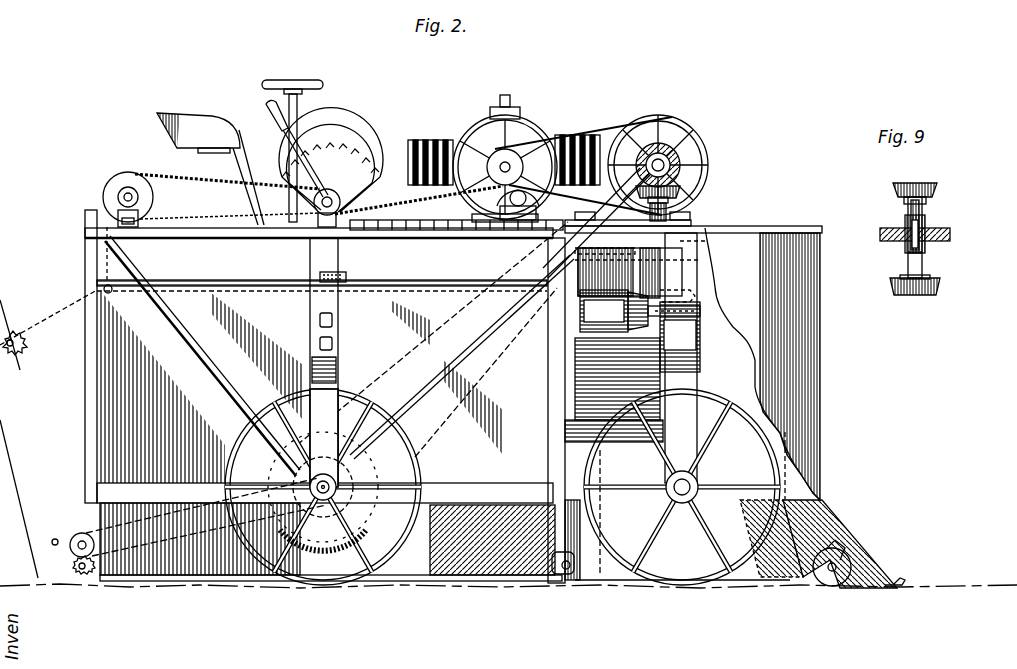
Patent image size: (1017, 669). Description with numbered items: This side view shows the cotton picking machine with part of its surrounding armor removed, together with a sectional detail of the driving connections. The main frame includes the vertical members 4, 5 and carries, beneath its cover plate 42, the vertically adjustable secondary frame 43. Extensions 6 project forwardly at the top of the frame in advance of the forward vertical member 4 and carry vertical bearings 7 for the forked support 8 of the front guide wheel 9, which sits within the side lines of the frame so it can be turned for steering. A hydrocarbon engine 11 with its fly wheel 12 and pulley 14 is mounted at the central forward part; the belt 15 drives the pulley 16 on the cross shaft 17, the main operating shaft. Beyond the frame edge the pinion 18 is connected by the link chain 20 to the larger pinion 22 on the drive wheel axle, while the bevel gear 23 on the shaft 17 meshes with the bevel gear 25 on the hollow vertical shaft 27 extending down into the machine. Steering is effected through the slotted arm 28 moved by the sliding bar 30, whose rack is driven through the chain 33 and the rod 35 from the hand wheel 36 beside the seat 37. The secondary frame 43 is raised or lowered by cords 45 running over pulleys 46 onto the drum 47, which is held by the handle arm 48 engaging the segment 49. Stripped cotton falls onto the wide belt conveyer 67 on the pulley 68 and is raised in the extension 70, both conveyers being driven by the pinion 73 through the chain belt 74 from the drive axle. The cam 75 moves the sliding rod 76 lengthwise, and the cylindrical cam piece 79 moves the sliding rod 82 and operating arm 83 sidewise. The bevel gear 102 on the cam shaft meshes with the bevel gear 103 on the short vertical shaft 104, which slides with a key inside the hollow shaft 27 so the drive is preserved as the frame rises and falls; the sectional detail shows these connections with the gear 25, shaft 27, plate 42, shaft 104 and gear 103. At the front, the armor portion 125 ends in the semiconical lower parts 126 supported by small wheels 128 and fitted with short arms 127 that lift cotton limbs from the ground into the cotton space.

In FIG. 2, the vertical member 4 is at (550, 366).
In FIG. 2, the vertical member 5 is at (85, 368).
In FIG. 2, the extensions 6 is at (655, 237).
In FIG. 2, the vertical bearings 7 is at (663, 273).
In FIG. 2, the forked support 8 is at (681, 358).
In FIG. 2, the front or guide wheel 9 is at (730, 418).
In FIG. 2, the hydrocarbon engine 11 is at (422, 140).
In FIG. 2, the fly wheel 12 is at (522, 126).
In FIG. 2, the pulley 14 is at (500, 158).
In FIG. 2, the belt 15 is at (568, 134).
In FIG. 2, the pulley 16 is at (685, 134).
In FIG. 2, the cross shaft 17 is at (658, 142).
In FIG. 2, the pinion 18 is at (640, 150).
In FIG. 2, the link chain 20 is at (392, 380).
In FIG. 2, the larger pinion 22 is at (360, 456).
In FIG. 2, the bevel gear 23 is at (682, 162).
In FIG. 2, the bevel gear 25 is at (676, 190).
In FIG. 9, the bevel gear 25 is at (893, 190).
In FIG. 2, the vertical shaft 27 is at (668, 206).
In FIG. 9, the vertical shaft 27 is at (926, 212).
In FIG. 2, the slotted arm 28 is at (690, 225).
In FIG. 2, the sliding rod or bar 30 is at (630, 272).
In FIG. 2, the chain 33 is at (404, 232).
In FIG. 2, the rod 35 is at (298, 112).
In FIG. 2, the hand wheel 36 is at (323, 86).
In FIG. 2, the seat 37 is at (216, 120).
In FIG. 2, the cover plate 42 is at (212, 230).
In FIG. 9, the cover plate 42 is at (880, 236).
In FIG. 2, the secondary frame 43 is at (301, 386).
In FIG. 2, the cords or chains 45 is at (216, 186).
In FIG. 2, the pulley 46 is at (112, 182).
In FIG. 2, the drum 47 is at (342, 188).
In FIG. 2, the handle arm 48 is at (294, 146).
In FIG. 2, the segment 49 is at (346, 156).
In FIG. 2, the belt conveyer 67 is at (557, 582).
In FIG. 2, the pulley 68 is at (590, 582).
In FIG. 2, the extension 70 is at (97, 283).
In FIG. 2, the pinion 73 is at (78, 534).
In FIG. 2, the chain belt 74 is at (250, 522).
In FIG. 2, the cam 75 is at (617, 379).
In FIG. 2, the sliding rod 76 is at (568, 437).
In FIG. 2, the cylindrical cam piece 79 is at (604, 311).
In FIG. 2, the sliding rod 82 is at (450, 282).
In FIG. 2, the operating arm 83 is at (322, 276).
In FIG. 2, the bevel gear 102 is at (688, 342).
In FIG. 2, the bevel gear 103 is at (692, 292).
In FIG. 9, the bevel gear 103 is at (940, 290).
In FIG. 2, the short vertical shaft 104 is at (667, 274).
In FIG. 9, the short vertical shaft 104 is at (925, 263).
In FIG. 2, the side wall 125 is at (812, 408).
In FIG. 2, the semiconical forwardly projecting lower parts 126 is at (830, 522).
In FIG. 2, the short arms 127 is at (900, 584).
In FIG. 2, the small wheels 128 is at (830, 588).